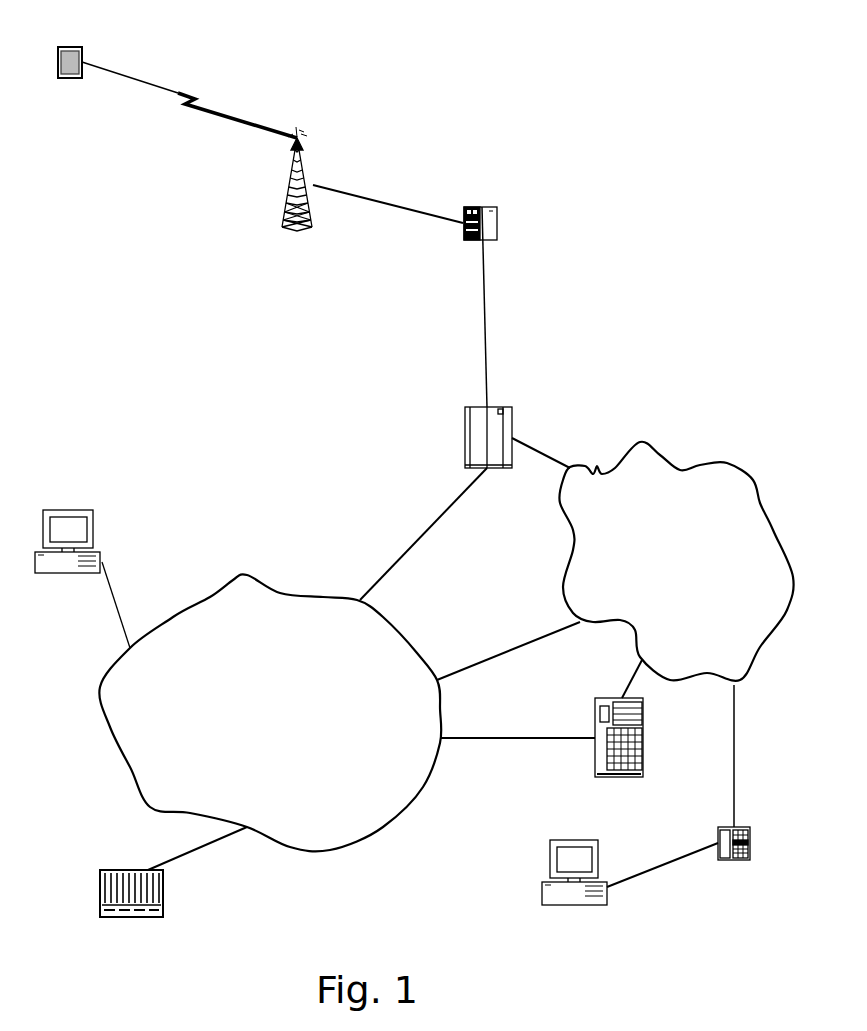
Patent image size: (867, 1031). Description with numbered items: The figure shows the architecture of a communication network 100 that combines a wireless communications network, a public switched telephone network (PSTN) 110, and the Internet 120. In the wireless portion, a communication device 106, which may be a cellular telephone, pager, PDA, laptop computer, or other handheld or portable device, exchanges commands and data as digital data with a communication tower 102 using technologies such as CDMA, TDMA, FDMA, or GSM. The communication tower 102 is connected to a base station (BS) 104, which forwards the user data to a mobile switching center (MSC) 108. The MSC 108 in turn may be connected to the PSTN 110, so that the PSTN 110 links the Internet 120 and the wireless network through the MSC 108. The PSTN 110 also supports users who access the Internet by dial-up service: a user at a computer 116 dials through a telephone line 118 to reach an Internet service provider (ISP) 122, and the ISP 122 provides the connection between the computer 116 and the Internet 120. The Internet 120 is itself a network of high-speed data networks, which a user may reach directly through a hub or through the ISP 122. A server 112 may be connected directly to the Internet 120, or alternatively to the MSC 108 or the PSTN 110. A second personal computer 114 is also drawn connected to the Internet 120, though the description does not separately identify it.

The communication network 100 is at (501, 71).
The communication tower 102 is at (298, 132).
The base station 104 is at (482, 207).
The communication device 106 is at (72, 47).
The mobile switching center 108 is at (465, 438).
The public switched telephone network 110 is at (682, 470).
The server 112 is at (113, 870).
The personal computer 114 is at (92, 540).
The computer 116 is at (573, 840).
The telephone line 118 is at (735, 862).
The Internet 120 is at (315, 597).
The Internet service provider 122 is at (593, 715).